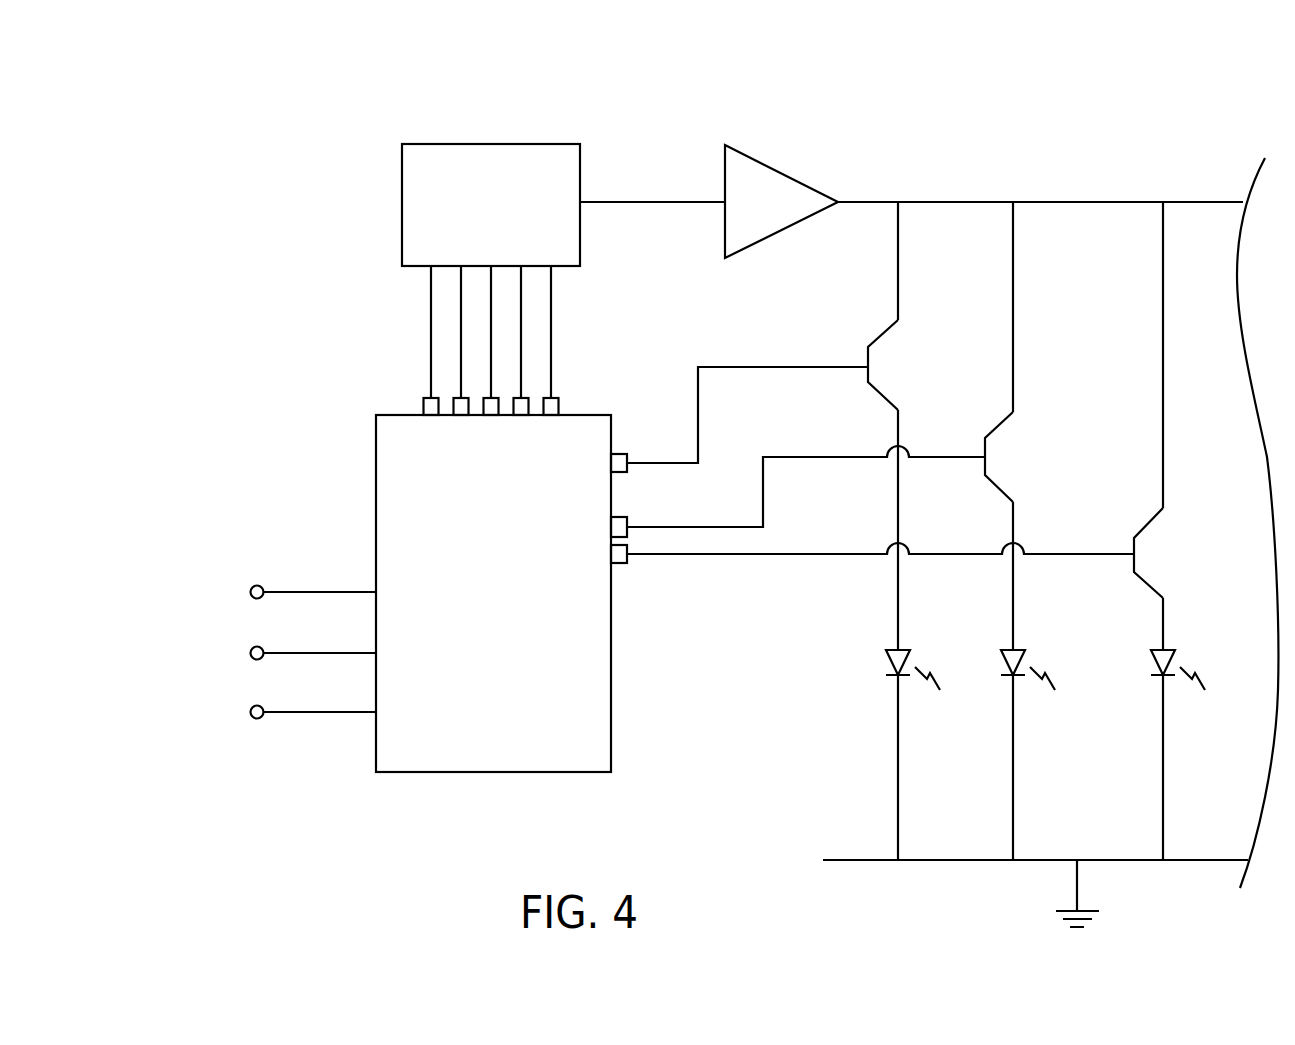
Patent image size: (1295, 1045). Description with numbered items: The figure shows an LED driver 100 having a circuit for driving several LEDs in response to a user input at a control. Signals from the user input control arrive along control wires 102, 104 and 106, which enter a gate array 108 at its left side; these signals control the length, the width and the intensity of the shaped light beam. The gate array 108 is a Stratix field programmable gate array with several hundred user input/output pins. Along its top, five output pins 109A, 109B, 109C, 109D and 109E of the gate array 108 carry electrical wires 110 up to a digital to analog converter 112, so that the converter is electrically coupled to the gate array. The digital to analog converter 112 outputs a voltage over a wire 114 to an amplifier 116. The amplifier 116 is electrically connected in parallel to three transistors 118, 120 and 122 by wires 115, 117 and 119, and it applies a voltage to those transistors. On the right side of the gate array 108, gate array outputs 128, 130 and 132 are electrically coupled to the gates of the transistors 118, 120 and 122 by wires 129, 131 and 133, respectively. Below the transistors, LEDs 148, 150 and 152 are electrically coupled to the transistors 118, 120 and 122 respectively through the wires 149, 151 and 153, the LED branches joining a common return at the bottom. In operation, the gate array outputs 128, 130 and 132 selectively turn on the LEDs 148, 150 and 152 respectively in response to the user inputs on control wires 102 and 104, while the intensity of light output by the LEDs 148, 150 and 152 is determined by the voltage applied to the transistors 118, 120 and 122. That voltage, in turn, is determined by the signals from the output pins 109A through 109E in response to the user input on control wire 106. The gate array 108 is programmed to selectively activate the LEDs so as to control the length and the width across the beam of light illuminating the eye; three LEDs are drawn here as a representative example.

The LED driver 100 is at (748, 85).
The control wire 102 is at (302, 590).
The control wire 104 is at (288, 650).
The control wire 106 is at (288, 710).
The gate array 108 is at (375, 505).
The output pin 109A is at (431, 415).
The output pin 109B is at (461, 415).
The output pin 109C is at (491, 415).
The output pin 109D is at (521, 415).
The output pin 109E is at (551, 415).
The electrical wires 110 is at (405, 367).
The digital to analog converter 112 is at (402, 202).
The wire 114 is at (645, 200).
The amplifier 116 is at (782, 174).
The wire 115 is at (898, 287).
The wire 117 is at (1013, 296).
The wire 119 is at (1164, 275).
The transistor 118 is at (880, 340).
The transistor 120 is at (1000, 424).
The transistor 122 is at (1137, 540).
The gate array output 128 is at (625, 455).
The wire 129 is at (730, 367).
The gate array output 130 is at (625, 520).
The wire 131 is at (826, 457).
The gate array output 132 is at (625, 565).
The wire 133 is at (866, 553).
The LED 148 is at (887, 656).
The wire 149 is at (898, 595).
The LED 150 is at (1000, 662).
The wire 151 is at (1013, 582).
The LED 152 is at (1152, 660).
The wire 153 is at (1165, 615).